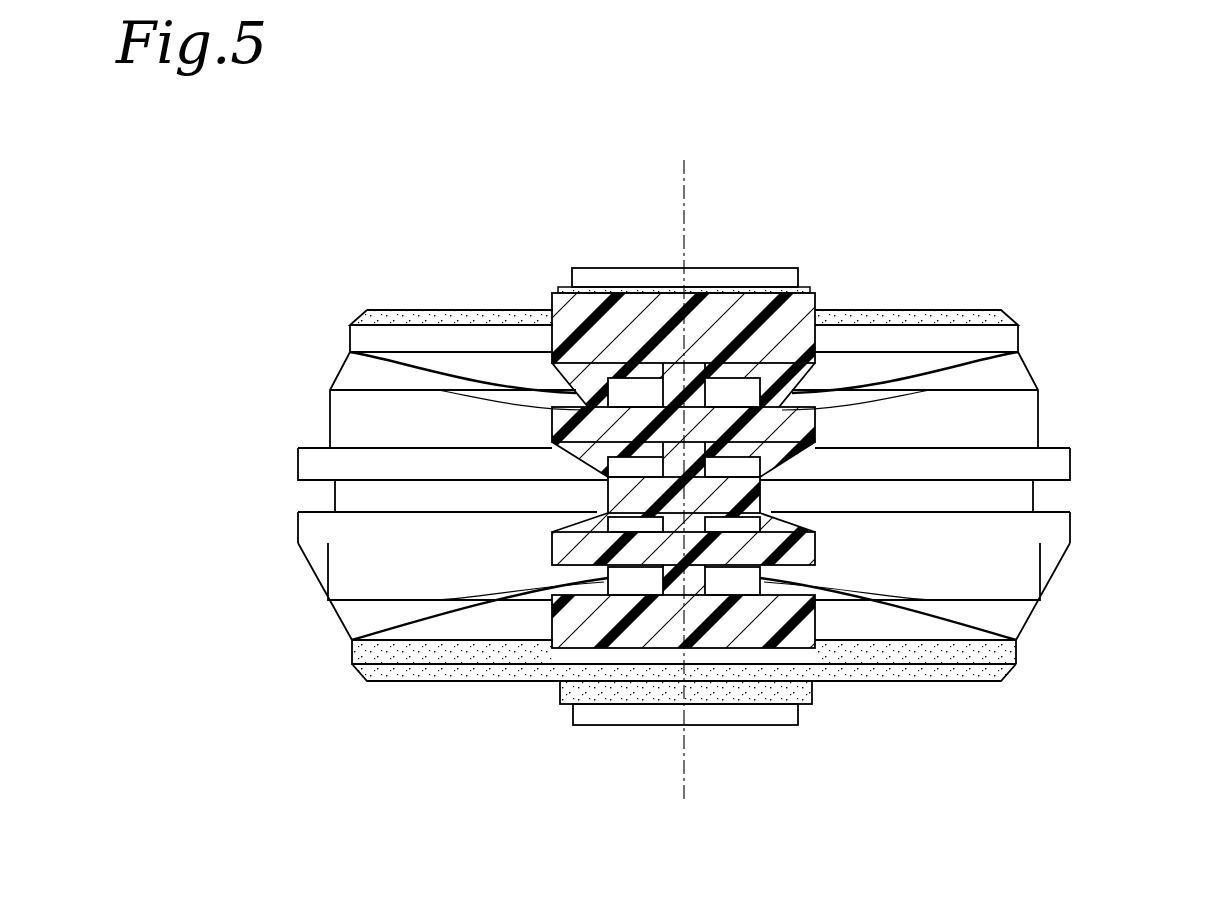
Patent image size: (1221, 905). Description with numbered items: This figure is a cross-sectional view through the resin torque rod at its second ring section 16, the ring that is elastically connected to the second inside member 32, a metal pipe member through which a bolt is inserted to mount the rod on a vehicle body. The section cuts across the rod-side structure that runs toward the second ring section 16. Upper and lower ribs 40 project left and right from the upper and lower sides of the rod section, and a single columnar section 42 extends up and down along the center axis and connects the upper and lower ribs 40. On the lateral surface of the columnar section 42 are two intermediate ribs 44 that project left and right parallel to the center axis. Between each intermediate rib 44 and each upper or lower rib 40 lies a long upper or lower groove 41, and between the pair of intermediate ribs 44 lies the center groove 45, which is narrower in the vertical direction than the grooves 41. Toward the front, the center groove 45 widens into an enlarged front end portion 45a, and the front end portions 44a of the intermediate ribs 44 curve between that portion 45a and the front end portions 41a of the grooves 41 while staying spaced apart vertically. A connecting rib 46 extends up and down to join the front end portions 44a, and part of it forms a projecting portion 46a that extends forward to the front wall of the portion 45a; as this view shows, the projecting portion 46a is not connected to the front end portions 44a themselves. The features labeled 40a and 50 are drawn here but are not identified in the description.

The second ring section 16 is at (338, 282).
The second inside member 32 is at (663, 714).
The upper and lower ribs 40 is at (470, 385).
The plate surface 40a is at (536, 300).
The upper and lower grooves 41 is at (387, 390).
The front end portions of the upper and lower grooves 41a is at (812, 798).
The columnar section 42 is at (340, 455).
The intermediate ribs 44 is at (330, 462).
The front end portions of the intermediate ribs 44a is at (553, 423).
The center groove 45 is at (335, 496).
The front end portion of the center groove 45a is at (627, 372).
The connecting rib 46 is at (628, 380).
The projecting portion 46a is at (612, 596).
The coating layer 50 is at (427, 366).